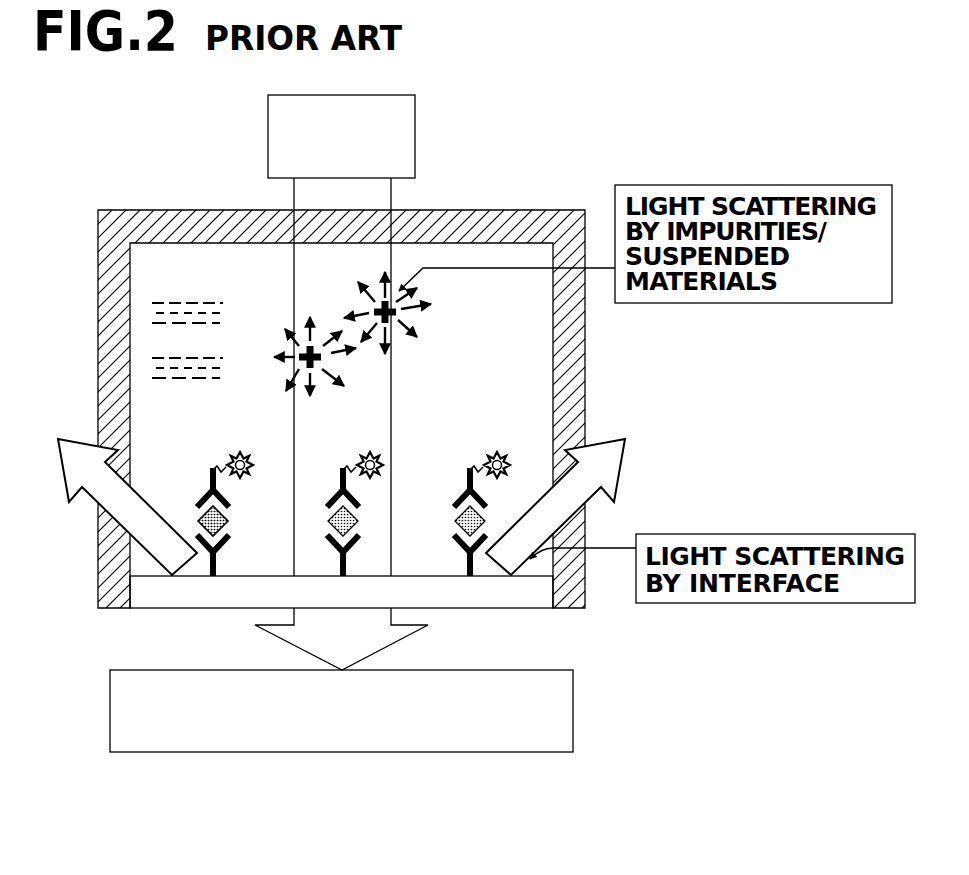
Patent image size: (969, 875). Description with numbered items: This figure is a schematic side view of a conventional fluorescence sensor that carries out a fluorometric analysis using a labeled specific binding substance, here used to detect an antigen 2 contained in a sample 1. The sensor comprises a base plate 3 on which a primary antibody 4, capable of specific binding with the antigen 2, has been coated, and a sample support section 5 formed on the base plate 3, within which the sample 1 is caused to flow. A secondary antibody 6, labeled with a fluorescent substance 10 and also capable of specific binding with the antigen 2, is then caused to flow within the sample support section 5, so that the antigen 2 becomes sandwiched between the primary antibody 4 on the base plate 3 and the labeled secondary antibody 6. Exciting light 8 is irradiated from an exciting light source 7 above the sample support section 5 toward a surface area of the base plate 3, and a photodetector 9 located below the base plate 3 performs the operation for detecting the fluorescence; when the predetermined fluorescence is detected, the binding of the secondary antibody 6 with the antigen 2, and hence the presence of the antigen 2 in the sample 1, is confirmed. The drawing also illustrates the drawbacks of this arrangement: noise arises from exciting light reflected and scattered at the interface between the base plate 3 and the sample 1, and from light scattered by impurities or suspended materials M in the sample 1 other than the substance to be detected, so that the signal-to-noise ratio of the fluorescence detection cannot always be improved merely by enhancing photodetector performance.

The sample 1 is at (158, 368).
The antigen 2 is at (202, 518).
The base plate 3 is at (143, 592).
The primary antibody 4 is at (212, 556).
The sample support section 5 is at (98, 252).
The secondary antibody 6 is at (472, 487).
The exciting light source 7 is at (415, 104).
The exciting light 8 is at (393, 363).
The photodetector 9 is at (573, 706).
The fluorescent substance 10 is at (500, 455).
The impurities/suspended materials M is at (306, 349).